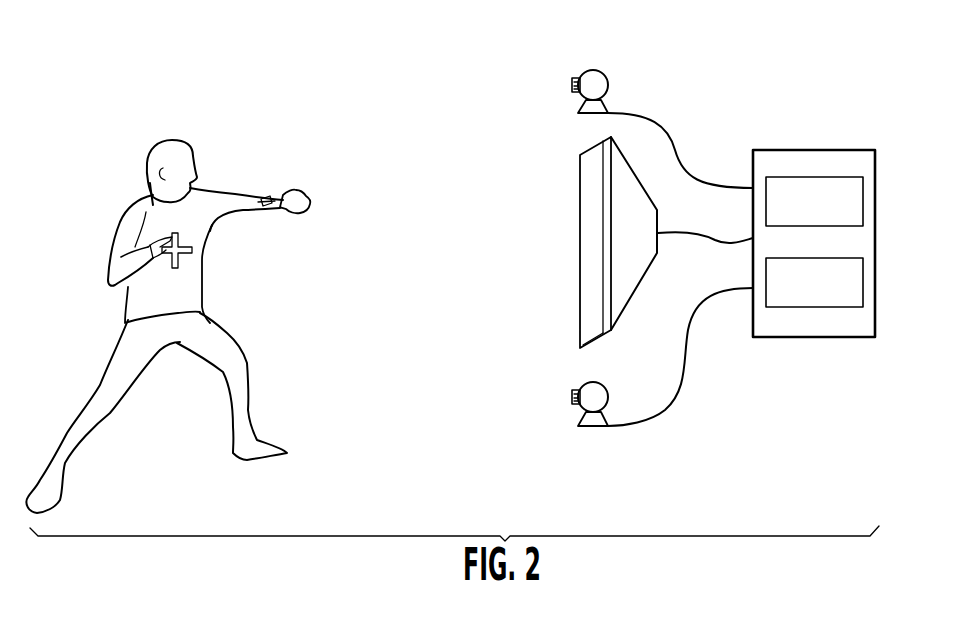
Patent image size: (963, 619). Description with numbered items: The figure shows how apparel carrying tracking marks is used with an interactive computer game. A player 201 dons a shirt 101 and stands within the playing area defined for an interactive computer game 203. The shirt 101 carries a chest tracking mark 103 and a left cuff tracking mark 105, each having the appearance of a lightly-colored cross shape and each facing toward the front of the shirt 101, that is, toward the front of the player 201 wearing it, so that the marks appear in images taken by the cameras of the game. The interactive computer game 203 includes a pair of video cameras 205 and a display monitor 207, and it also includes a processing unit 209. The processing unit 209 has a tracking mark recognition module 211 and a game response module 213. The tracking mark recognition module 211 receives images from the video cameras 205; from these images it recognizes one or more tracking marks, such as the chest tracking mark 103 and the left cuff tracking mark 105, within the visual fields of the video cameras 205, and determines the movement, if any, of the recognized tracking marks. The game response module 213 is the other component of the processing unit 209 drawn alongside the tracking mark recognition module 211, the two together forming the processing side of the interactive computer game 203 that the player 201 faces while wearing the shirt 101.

The shirt 101 is at (205, 200).
The chest tracking mark 103 is at (191, 250).
The left cuff tracking mark 105 is at (265, 196).
The player 201 is at (248, 387).
The interactive computer game 203 is at (503, 126).
The video cameras 205 is at (622, 73).
The display monitor 207 is at (570, 243).
The processing unit 209 is at (814, 204).
The tracking mark recognition module 211 is at (798, 212).
The game response module 213 is at (798, 294).